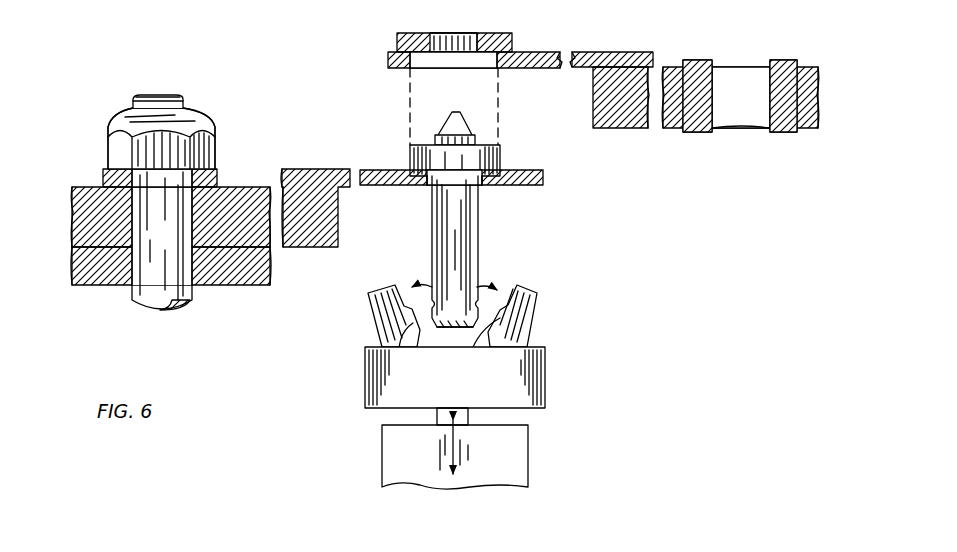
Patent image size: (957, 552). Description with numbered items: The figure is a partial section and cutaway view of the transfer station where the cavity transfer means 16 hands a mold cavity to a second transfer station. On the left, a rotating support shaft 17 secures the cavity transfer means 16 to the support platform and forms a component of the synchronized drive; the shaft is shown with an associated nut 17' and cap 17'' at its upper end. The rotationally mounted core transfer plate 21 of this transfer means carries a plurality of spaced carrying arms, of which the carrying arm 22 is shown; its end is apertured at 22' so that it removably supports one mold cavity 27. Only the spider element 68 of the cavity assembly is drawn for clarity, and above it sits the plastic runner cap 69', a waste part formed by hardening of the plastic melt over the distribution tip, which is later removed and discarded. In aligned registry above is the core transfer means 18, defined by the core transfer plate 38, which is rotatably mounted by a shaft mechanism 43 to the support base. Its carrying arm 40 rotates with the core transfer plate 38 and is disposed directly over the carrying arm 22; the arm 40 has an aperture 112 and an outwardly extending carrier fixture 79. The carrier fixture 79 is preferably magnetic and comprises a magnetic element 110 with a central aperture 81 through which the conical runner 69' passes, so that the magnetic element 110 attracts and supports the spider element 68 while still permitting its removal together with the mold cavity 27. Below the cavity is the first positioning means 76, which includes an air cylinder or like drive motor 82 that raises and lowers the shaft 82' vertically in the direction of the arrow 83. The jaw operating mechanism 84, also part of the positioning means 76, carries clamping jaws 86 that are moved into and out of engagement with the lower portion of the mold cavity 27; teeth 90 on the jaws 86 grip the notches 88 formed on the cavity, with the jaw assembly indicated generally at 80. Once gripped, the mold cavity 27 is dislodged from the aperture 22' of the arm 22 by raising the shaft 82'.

The cavity transfer means 16 is at (247, 290).
The rotating support shaft 17 is at (167, 247).
The nut 17' is at (181, 138).
The nut cap 17'' is at (184, 90).
The core transfer plate 21 is at (293, 247).
The carrying arm 22 is at (451, 158).
The aperture 22' is at (430, 198).
The mold cavity 27 is at (480, 200).
The core transfer plate 38 is at (613, 128).
The carrying arm 40 is at (580, 65).
The shaft mechanism 43 is at (800, 130).
The core transfer means 18 is at (720, 48).
The magnetic element 110 is at (398, 33).
The central aperture 81 is at (452, 20).
The carrier fixture 79 is at (515, 35).
The aperture 112 is at (438, 68).
The plastic runner cap 69' is at (463, 115).
The spider element 68 is at (502, 153).
The notches 88 is at (448, 272).
The clamping jaws 86 is at (370, 310).
The jaw assembly 80 is at (560, 343).
The jaw operating mechanism 84 is at (545, 367).
The teeth 90 is at (449, 352).
The shaft 82' is at (508, 429).
The air cylinder 82 is at (478, 457).
The directional arrow 83 is at (450, 430).
The first positioning means 76 is at (603, 417).